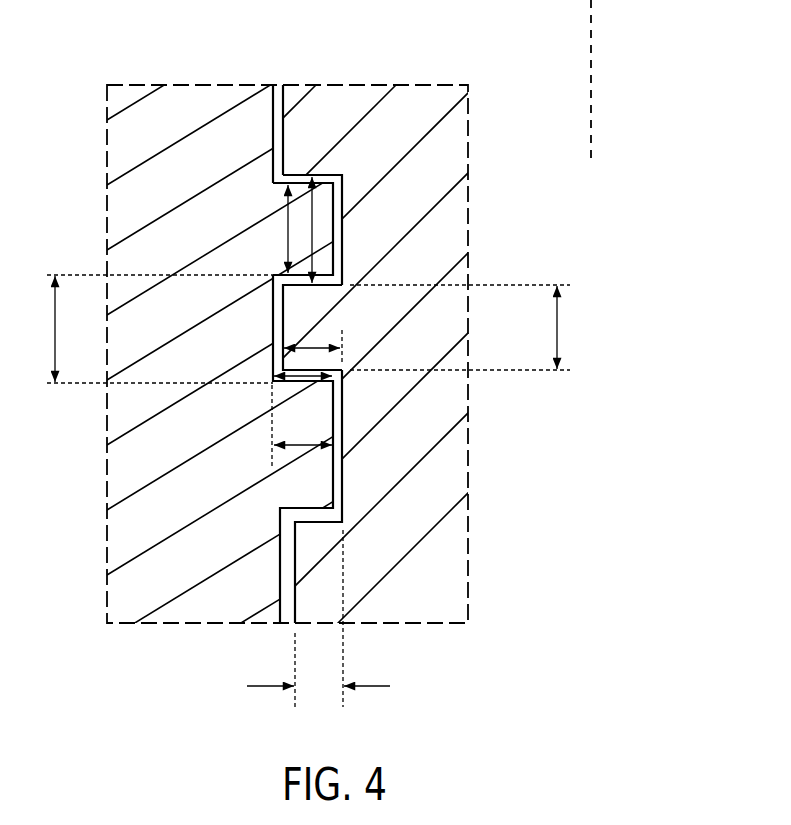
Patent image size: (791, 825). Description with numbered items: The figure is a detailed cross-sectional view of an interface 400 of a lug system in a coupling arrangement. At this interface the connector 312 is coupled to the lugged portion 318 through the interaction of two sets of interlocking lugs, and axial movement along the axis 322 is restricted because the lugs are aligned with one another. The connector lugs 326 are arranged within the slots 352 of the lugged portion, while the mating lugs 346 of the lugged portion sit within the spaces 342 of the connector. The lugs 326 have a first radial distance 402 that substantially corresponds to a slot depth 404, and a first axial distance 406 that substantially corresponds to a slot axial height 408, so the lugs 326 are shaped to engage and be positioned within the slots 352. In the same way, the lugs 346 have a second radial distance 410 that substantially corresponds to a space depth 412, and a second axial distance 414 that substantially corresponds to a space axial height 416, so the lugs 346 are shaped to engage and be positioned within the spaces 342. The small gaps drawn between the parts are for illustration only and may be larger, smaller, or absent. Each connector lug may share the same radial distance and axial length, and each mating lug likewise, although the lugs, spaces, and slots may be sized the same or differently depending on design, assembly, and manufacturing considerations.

The connector 312 is at (249, 352).
The lugged portion 318 is at (395, 326).
The axis 322 is at (592, 72).
The lugs 326 is at (300, 492).
The spaces 342 is at (270, 313).
The lugs 346 is at (320, 312).
The slots 352 is at (347, 462).
The interface 400 is at (278, 78).
The first radial distance 402 is at (305, 443).
The slot depth 404 is at (377, 684).
The first axial distance 406 is at (292, 231).
The slot axial height 408 is at (317, 228).
The second radial distance 410 is at (315, 347).
The space depth 412 is at (300, 374).
The second axial distance 414 is at (560, 330).
The space axial height 416 is at (155, 329).